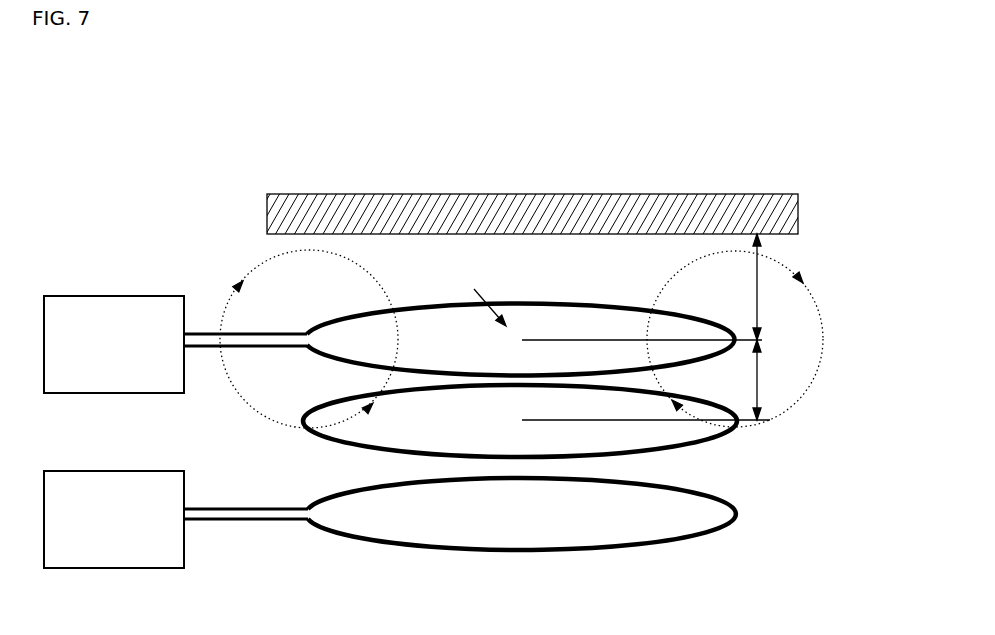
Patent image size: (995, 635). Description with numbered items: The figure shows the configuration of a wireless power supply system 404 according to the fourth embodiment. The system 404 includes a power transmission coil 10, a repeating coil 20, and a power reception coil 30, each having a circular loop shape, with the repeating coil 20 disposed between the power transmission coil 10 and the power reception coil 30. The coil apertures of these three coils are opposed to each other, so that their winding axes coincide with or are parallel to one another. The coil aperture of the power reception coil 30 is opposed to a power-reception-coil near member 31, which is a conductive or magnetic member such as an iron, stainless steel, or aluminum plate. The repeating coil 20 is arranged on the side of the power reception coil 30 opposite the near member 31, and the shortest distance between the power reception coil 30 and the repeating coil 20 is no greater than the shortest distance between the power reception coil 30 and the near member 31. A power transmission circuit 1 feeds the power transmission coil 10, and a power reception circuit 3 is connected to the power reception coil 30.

The wireless power supply system 404 is at (798, 84).
The power-reception-coil near member 31 is at (528, 194).
The power reception circuit 3 is at (117, 296).
The power transmission circuit 1 is at (117, 471).
The power reception coil 30 is at (319, 324).
The repeating coil 20 is at (319, 402).
The power transmission coil 10 is at (319, 498).